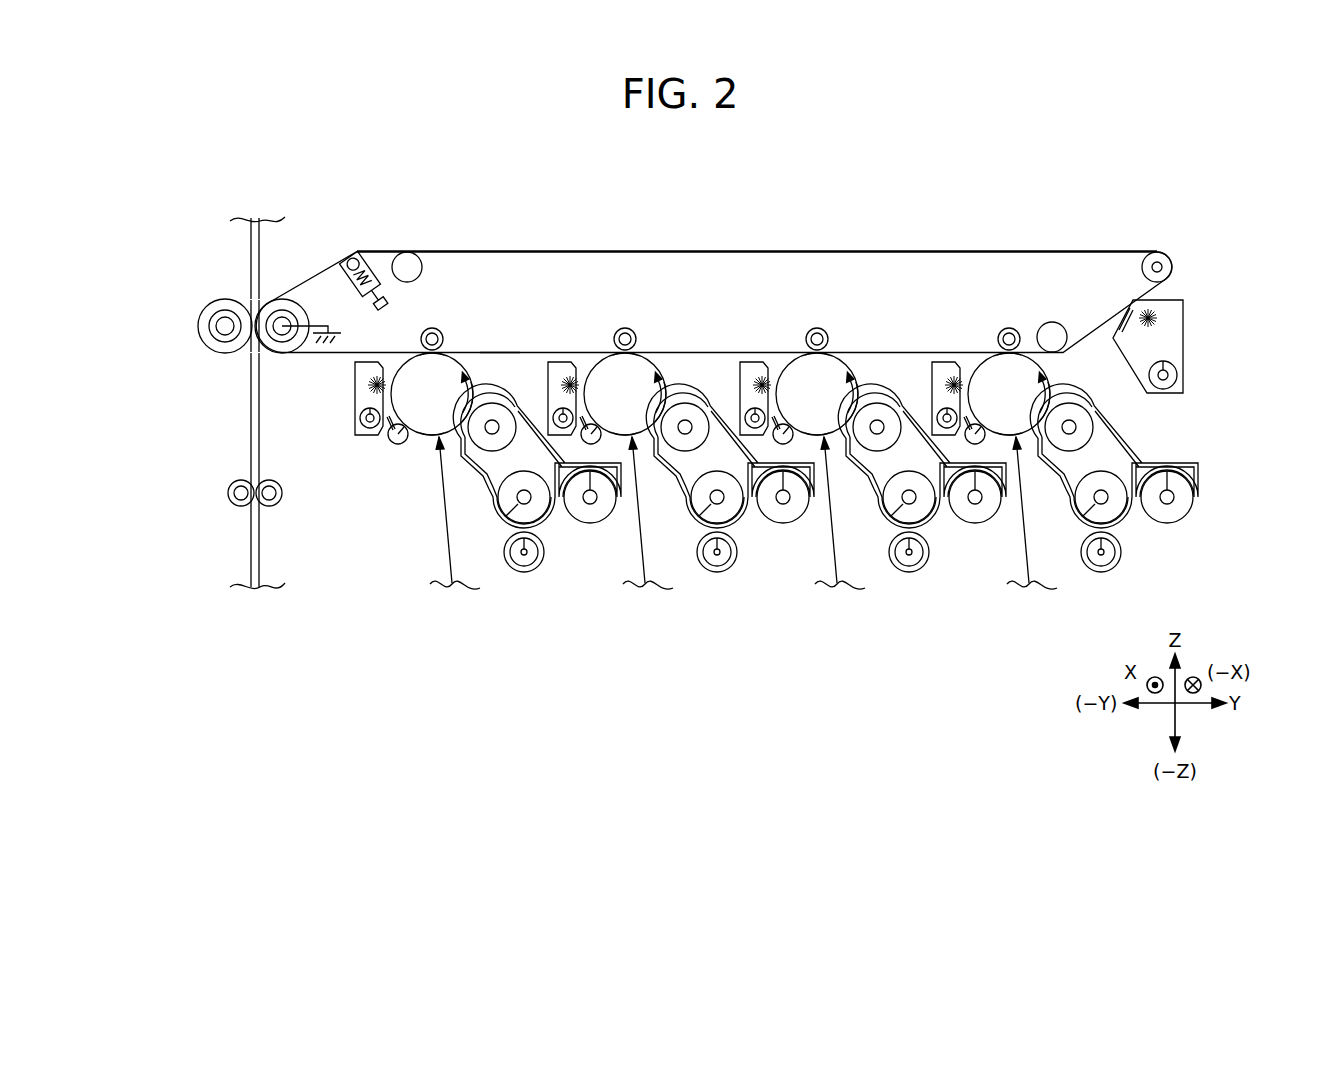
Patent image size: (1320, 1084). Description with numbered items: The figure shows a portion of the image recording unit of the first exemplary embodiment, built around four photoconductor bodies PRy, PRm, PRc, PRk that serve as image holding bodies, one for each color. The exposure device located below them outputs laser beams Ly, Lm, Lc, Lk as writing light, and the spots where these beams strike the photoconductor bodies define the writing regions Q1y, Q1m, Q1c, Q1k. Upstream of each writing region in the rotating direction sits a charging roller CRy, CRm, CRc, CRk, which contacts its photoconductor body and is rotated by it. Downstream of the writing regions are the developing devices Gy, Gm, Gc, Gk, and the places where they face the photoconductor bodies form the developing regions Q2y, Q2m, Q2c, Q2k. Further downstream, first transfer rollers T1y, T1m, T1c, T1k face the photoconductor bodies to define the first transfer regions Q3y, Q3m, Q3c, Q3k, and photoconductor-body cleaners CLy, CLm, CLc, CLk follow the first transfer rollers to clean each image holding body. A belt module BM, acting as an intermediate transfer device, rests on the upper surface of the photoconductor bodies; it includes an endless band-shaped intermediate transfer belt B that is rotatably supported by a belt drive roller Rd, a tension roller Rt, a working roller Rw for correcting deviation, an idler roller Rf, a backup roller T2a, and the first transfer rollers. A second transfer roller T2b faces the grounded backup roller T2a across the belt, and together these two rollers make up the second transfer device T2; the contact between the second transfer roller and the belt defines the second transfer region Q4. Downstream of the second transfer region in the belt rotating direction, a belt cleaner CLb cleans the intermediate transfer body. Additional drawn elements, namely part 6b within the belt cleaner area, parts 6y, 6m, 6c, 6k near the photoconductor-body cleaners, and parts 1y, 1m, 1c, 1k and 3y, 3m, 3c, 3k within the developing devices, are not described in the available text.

The belt module BM is at (471, 241).
The intermediate transfer belt B is at (495, 254).
The belt drive roller Rd is at (1173, 266).
The idler roller Rf is at (1052, 321).
The working roller Rw is at (406, 252).
The tension roller Rt is at (353, 256).
The second transfer device T2 is at (190, 344).
The backup roller T2a is at (288, 299).
The second transfer roller T2b is at (220, 299).
The second transfer region Q4 is at (250, 345).
The belt cleaner CLb is at (1190, 333).
The belt cleaning roller 6b is at (1178, 376).
The photoconductor body PRk is at (418, 379).
The photoconductor body PRc is at (610, 324).
The photoconductor body PRm is at (801, 324).
The photoconductor body PRy is at (994, 324).
The first transfer roller T1k is at (446, 307).
The first transfer roller T1c is at (638, 307).
The first transfer roller T1m is at (833, 307).
The first transfer roller T1y is at (1020, 307).
The first transfer region Q3k is at (420, 324).
The first transfer region Q3c is at (613, 324).
The first transfer region Q3m is at (803, 324).
The first transfer region Q3y is at (995, 324).
The developing region Q2k is at (481, 375).
The developing region Q2c is at (673, 375).
The developing region Q2m is at (870, 375).
The developing region Q2y is at (1069, 389).
The writing region Q1k is at (459, 489).
The writing region Q1c is at (651, 489).
The writing region Q1m is at (847, 489).
The writing region Q1y is at (1034, 489).
The photoconductor-body cleaner CLk is at (342, 398).
The photoconductor-body cleaner CLc is at (551, 374).
The photoconductor-body cleaner CLm is at (743, 374).
The photoconductor-body cleaner CLy is at (937, 371).
The cleaning roller (black) 6k is at (343, 421).
The cleaning roller (cyan) 6c is at (545, 396).
The cleaning roller (magenta) 6m is at (736, 396).
The cleaning roller (yellow) 6y is at (929, 393).
The charging roller CRk is at (396, 464).
The charging roller CRc is at (570, 354).
The charging roller CRm is at (756, 354).
The charging roller CRy is at (950, 353).
The laser beam Lk is at (441, 513).
The laser beam Lc is at (634, 513).
The laser beam Lm is at (826, 513).
The laser beam Ly is at (1017, 513).
The developing device Gk is at (538, 492).
The developing device Gc is at (731, 492).
The developing device Gm is at (923, 492).
The developing device Gy is at (1115, 490).
The developer housing (black) 1k is at (537, 498).
The developer housing (cyan) 1c is at (730, 498).
The developer housing (magenta) 1m is at (922, 498).
The developer housing (yellow) 1y is at (1114, 497).
The toner supply roller (black) 3k is at (523, 573).
The toner supply roller (cyan) 3c is at (716, 573).
The toner supply roller (magenta) 3m is at (906, 573).
The toner supply roller (yellow) 3y is at (1099, 573).